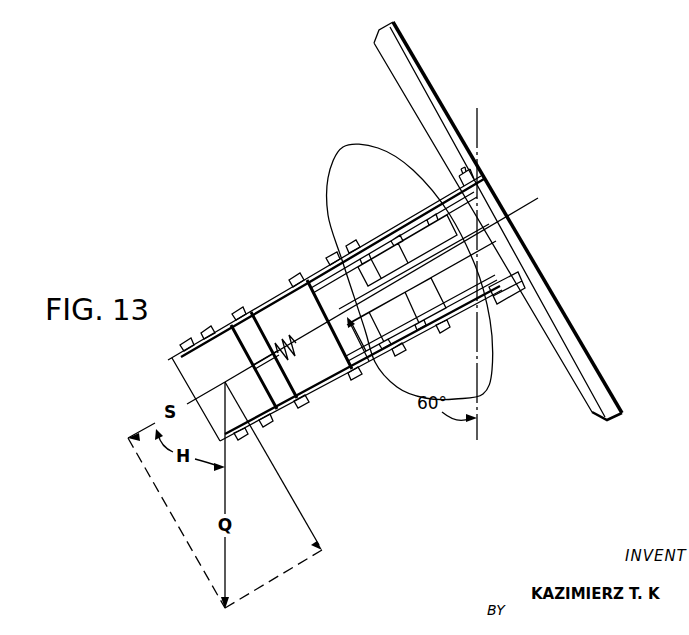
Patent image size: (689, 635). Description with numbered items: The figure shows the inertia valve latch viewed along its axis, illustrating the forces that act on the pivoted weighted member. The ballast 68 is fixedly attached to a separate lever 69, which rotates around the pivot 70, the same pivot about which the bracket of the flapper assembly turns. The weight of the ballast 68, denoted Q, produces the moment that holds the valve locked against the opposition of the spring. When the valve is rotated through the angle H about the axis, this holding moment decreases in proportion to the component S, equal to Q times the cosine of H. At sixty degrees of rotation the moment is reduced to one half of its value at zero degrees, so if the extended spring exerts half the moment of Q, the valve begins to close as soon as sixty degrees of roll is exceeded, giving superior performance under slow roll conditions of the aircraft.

The ballast 68 is at (225, 382).
The lever 69 is at (345, 373).
The pivot 70 is at (512, 291).